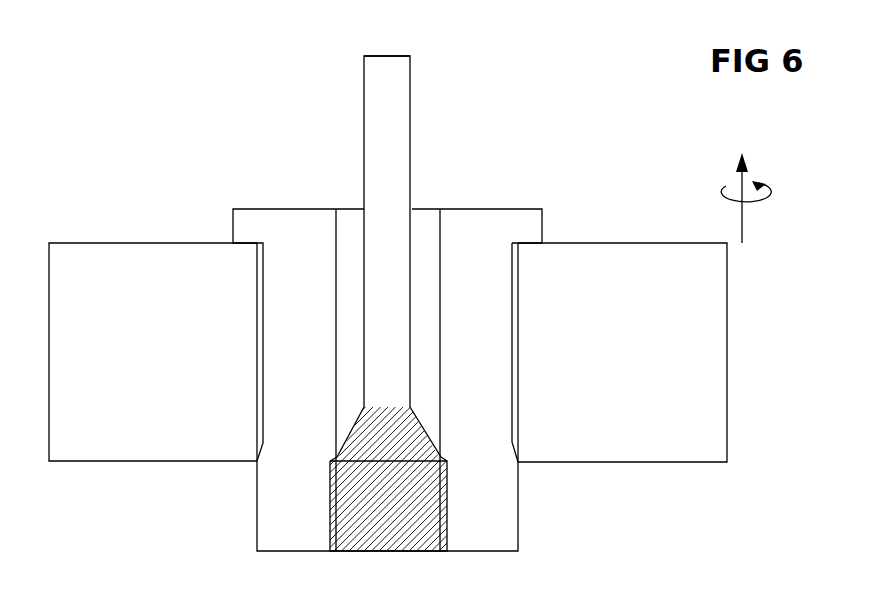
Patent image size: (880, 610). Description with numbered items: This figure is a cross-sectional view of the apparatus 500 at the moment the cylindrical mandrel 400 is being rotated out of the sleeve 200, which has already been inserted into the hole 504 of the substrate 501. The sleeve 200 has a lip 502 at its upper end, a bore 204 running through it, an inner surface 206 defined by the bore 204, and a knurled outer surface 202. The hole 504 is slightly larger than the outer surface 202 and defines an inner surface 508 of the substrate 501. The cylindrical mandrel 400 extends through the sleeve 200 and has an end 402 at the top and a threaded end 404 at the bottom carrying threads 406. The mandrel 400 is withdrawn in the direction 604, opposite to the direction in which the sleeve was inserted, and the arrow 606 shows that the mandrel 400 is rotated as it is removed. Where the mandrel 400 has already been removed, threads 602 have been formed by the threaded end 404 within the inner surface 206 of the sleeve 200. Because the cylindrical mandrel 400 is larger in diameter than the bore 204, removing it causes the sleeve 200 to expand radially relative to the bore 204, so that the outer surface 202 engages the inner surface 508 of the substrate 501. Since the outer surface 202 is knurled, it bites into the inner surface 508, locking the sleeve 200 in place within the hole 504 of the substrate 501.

The apparatus 500 is at (66, 174).
The sleeve 200 is at (494, 274).
The outer surface 202 is at (508, 330).
The bore 204 is at (457, 219).
The inner surface 206 is at (345, 215).
The cylindrical mandrel 400 is at (412, 163).
The end 402 is at (388, 55).
The threaded end 404 is at (346, 460).
The threads 406 is at (418, 438).
The substrate 501 is at (721, 272).
The lip 502 is at (257, 215).
The hole 504 is at (245, 473).
The inner surface 508 is at (257, 368).
The threads 602 is at (398, 542).
The direction 604 is at (742, 236).
The arrow 606 is at (727, 190).